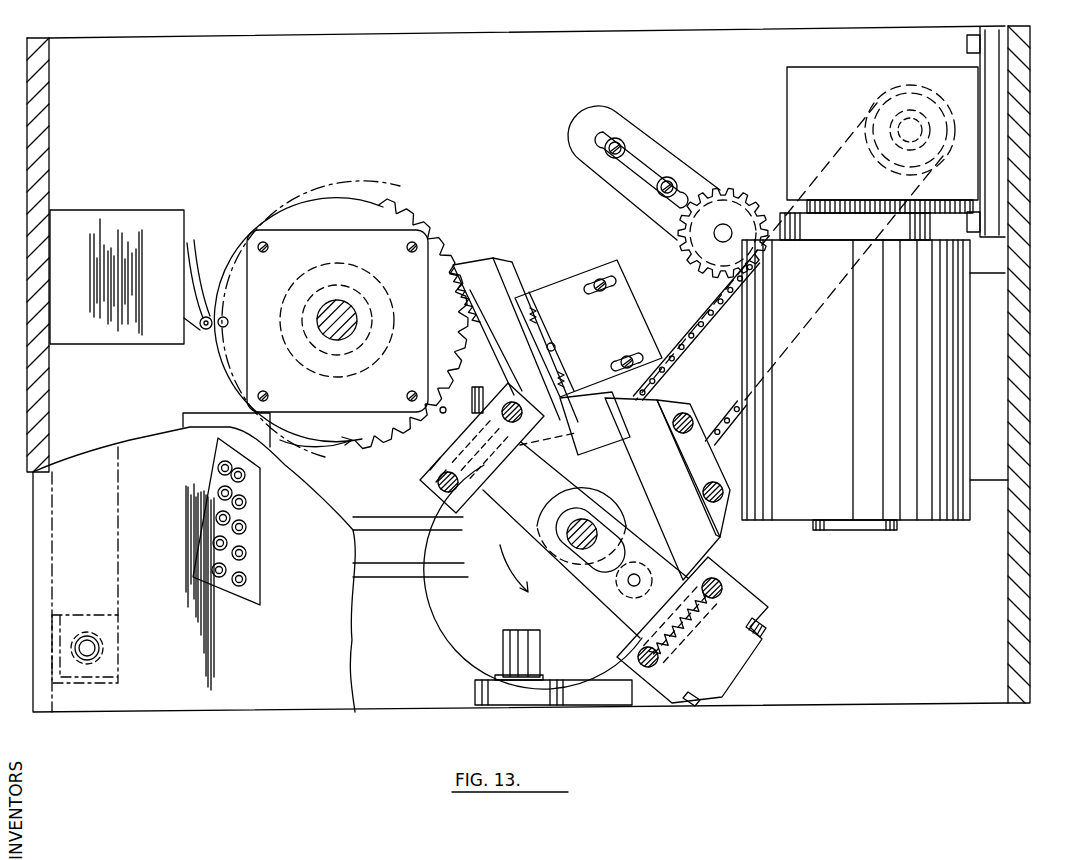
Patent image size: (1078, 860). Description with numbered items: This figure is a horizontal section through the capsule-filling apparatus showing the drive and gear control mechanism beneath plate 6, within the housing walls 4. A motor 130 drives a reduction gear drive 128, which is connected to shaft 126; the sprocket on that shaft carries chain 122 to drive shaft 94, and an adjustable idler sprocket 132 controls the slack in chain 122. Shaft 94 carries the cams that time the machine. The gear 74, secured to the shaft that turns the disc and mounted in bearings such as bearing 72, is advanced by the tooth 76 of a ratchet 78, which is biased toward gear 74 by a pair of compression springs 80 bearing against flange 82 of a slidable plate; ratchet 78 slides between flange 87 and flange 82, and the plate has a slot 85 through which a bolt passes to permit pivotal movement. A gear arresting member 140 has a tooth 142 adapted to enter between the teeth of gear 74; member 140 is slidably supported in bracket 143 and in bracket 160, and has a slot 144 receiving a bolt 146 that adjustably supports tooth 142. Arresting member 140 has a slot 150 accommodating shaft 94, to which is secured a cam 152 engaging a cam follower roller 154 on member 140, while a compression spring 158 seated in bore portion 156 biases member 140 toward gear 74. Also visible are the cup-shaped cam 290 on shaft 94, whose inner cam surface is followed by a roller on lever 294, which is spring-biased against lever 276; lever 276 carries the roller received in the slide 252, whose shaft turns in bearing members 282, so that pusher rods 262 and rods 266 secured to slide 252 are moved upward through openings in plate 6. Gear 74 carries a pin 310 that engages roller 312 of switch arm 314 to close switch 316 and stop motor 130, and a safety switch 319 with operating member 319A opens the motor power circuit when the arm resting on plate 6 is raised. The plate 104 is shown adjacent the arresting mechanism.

The housing wall 4 is at (1020, 368).
The plate 6 is at (300, 618).
The bearing 72 is at (322, 203).
The gear 74 is at (398, 212).
The tooth 76 is at (470, 262).
The ratchet 78 is at (497, 275).
The compression springs 80 is at (533, 303).
The flange 82 is at (541, 328).
The slot 85 is at (556, 346).
The flange 87 is at (488, 340).
The shaft 94 is at (600, 504).
The pivot plate 104 is at (728, 505).
The chain 122 is at (716, 322).
The shaft 126 is at (930, 108).
The reduction gear drive 128 is at (882, 72).
The motor 130 is at (862, 377).
The adjustable idler sprocket 132 is at (745, 190).
The gear arresting member 140 is at (490, 508).
The tooth 142 is at (430, 392).
The bracket 143 is at (418, 485).
The slot 144 is at (442, 452).
The bolt 146 is at (566, 436).
The slot 150 is at (572, 582).
The cam 152 is at (636, 530).
The cam follower roller 154 is at (620, 598).
The bore portion 156 is at (752, 588).
The compression spring 158 is at (763, 634).
The bracket 160 is at (727, 578).
The slide 252 is at (213, 482).
The pusher rods 262 is at (246, 552).
The rods 266 is at (214, 543).
The lever 276 is at (380, 578).
The bearing member 282 is at (524, 700).
The cup-shaped cam 290 is at (473, 596).
The lever 294 is at (380, 528).
The pin 310 is at (228, 320).
The roller 312 is at (203, 330).
The switch arm 314 is at (198, 262).
The switch 316 is at (152, 222).
The safety switch 319 is at (87, 614).
The operating member 319A is at (97, 646).